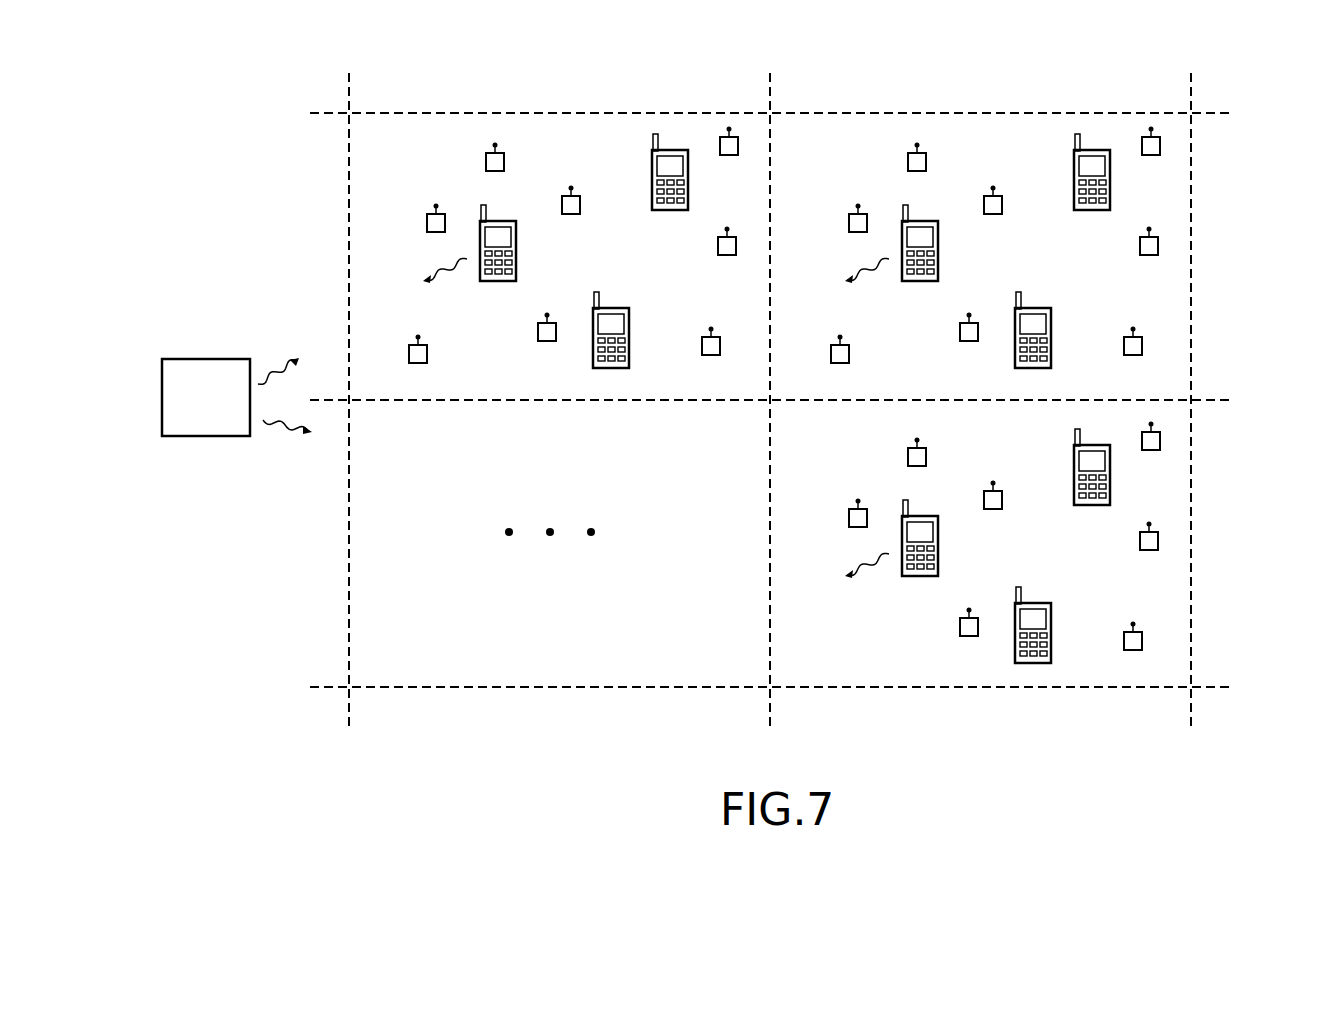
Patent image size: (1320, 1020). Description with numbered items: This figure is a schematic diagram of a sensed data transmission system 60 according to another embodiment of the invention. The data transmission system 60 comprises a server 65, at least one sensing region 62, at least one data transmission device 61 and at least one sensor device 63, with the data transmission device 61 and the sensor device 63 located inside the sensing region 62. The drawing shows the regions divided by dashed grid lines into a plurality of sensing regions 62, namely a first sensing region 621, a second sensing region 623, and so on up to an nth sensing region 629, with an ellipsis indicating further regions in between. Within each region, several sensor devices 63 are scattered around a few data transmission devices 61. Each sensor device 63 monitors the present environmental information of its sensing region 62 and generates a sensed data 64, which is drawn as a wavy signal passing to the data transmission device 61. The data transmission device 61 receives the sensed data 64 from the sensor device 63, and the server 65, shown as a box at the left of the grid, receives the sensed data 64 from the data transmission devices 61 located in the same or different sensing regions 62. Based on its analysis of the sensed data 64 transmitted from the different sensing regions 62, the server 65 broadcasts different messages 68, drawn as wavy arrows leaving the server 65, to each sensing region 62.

The data transmission system 60 is at (233, 165).
The data transmission device 61 is at (821, 398).
The sensing region 62 is at (1262, 228).
The first sensing region 621 is at (349, 160).
The second sensing region 623 is at (1191, 183).
The nth sensing region 629 is at (1191, 485).
The sensor device 63 is at (766, 387).
The sensed data 64 is at (656, 429).
The server 65 is at (203, 360).
The message 68 is at (285, 385).